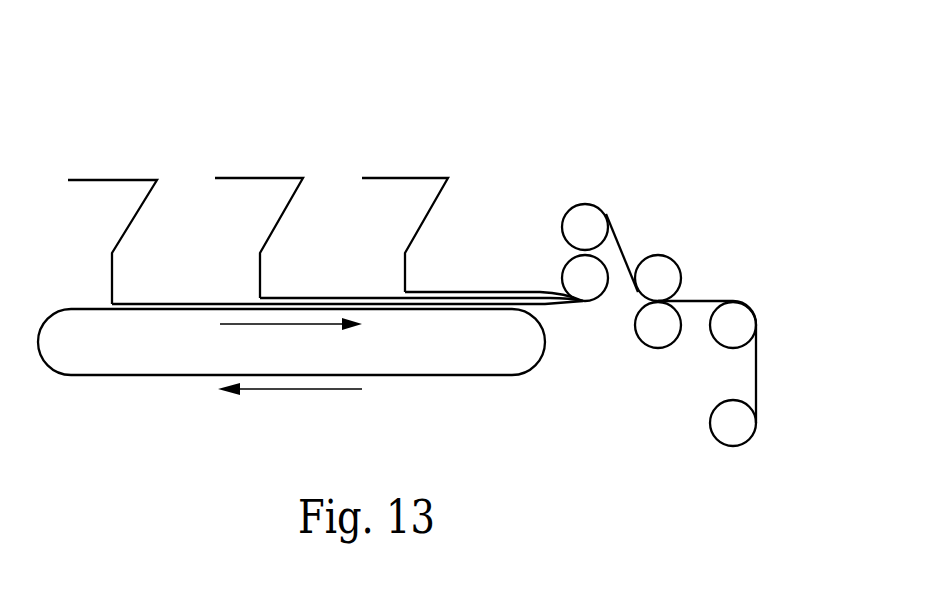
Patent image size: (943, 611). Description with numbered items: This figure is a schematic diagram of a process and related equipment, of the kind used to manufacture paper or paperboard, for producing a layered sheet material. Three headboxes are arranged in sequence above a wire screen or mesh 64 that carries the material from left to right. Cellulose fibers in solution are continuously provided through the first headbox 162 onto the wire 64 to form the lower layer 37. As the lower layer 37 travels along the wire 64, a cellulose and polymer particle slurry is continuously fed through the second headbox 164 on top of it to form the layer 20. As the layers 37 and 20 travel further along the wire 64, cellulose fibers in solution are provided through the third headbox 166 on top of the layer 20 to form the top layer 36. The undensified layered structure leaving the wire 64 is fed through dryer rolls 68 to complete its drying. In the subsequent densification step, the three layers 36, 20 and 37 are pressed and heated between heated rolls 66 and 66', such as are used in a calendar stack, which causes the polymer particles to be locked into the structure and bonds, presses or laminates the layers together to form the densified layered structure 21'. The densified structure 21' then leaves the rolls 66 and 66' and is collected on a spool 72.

The headbox 162 is at (144, 180).
The headbox 164 is at (288, 178).
The headbox 166 is at (448, 178).
The lower layer 37 is at (225, 302).
The layer 20 is at (287, 298).
The top layer 36 is at (425, 292).
The wire screen 64 is at (147, 377).
The dryer rolls 68 is at (573, 220).
The heated roll 66 is at (666, 242).
The heated roll 66' is at (629, 357).
The densified layered structure 21' is at (705, 362).
The spool 72 is at (733, 435).